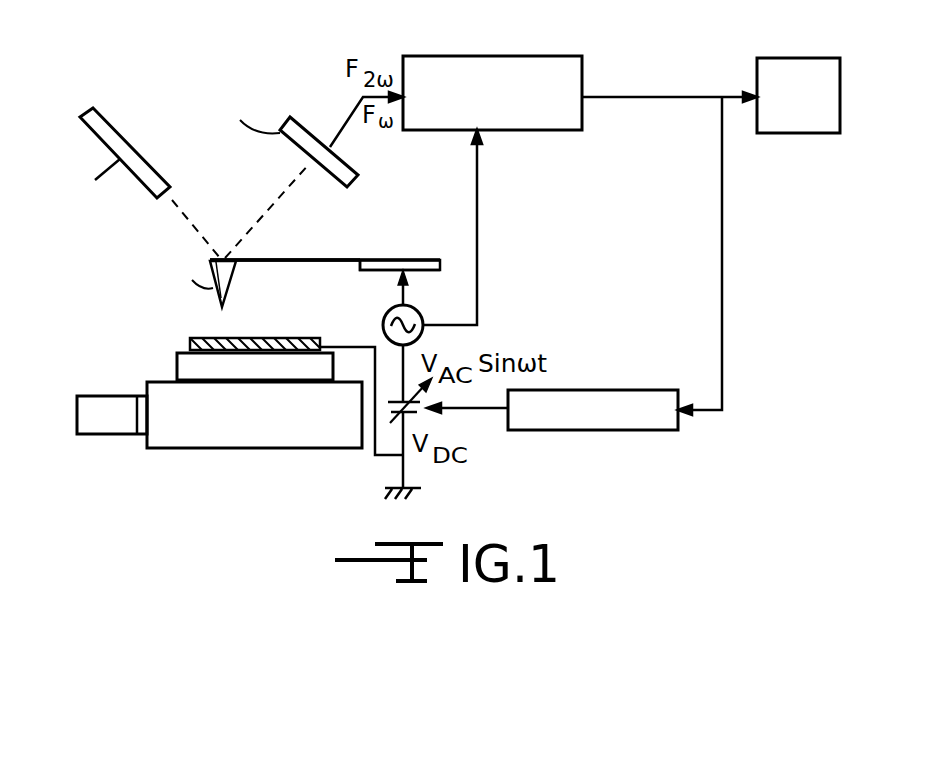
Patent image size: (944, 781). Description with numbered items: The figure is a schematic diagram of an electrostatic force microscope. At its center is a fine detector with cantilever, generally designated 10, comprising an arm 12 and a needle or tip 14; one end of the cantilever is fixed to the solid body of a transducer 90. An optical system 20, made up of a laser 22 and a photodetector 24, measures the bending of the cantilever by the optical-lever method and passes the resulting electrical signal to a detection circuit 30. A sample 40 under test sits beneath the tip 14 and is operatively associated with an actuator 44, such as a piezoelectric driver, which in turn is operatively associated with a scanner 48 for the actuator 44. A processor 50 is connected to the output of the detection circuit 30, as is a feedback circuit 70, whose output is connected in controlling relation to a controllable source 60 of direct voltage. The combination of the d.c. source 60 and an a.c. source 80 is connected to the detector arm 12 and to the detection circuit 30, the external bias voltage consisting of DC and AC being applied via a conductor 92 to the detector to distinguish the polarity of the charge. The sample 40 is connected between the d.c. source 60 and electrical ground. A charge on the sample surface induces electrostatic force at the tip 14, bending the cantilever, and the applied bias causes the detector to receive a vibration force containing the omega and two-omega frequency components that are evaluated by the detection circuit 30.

The fine detector with cantilever 10 is at (328, 244).
The arm 12 is at (302, 258).
The tip 14 is at (231, 280).
The optical system 20 is at (257, 64).
The laser 22 is at (93, 133).
The photodetector 24 is at (306, 120).
The detection circuit 30 is at (472, 55).
The sample 40 is at (190, 341).
The actuator 44 is at (177, 363).
The scanner 48 is at (166, 449).
The processor 50 is at (783, 58).
The controllable source of direct voltage 60 is at (418, 418).
The feedback circuit 70 is at (575, 430).
The a.c. source 80 is at (425, 333).
The transducer 90 is at (363, 271).
The conductor 92 is at (410, 296).